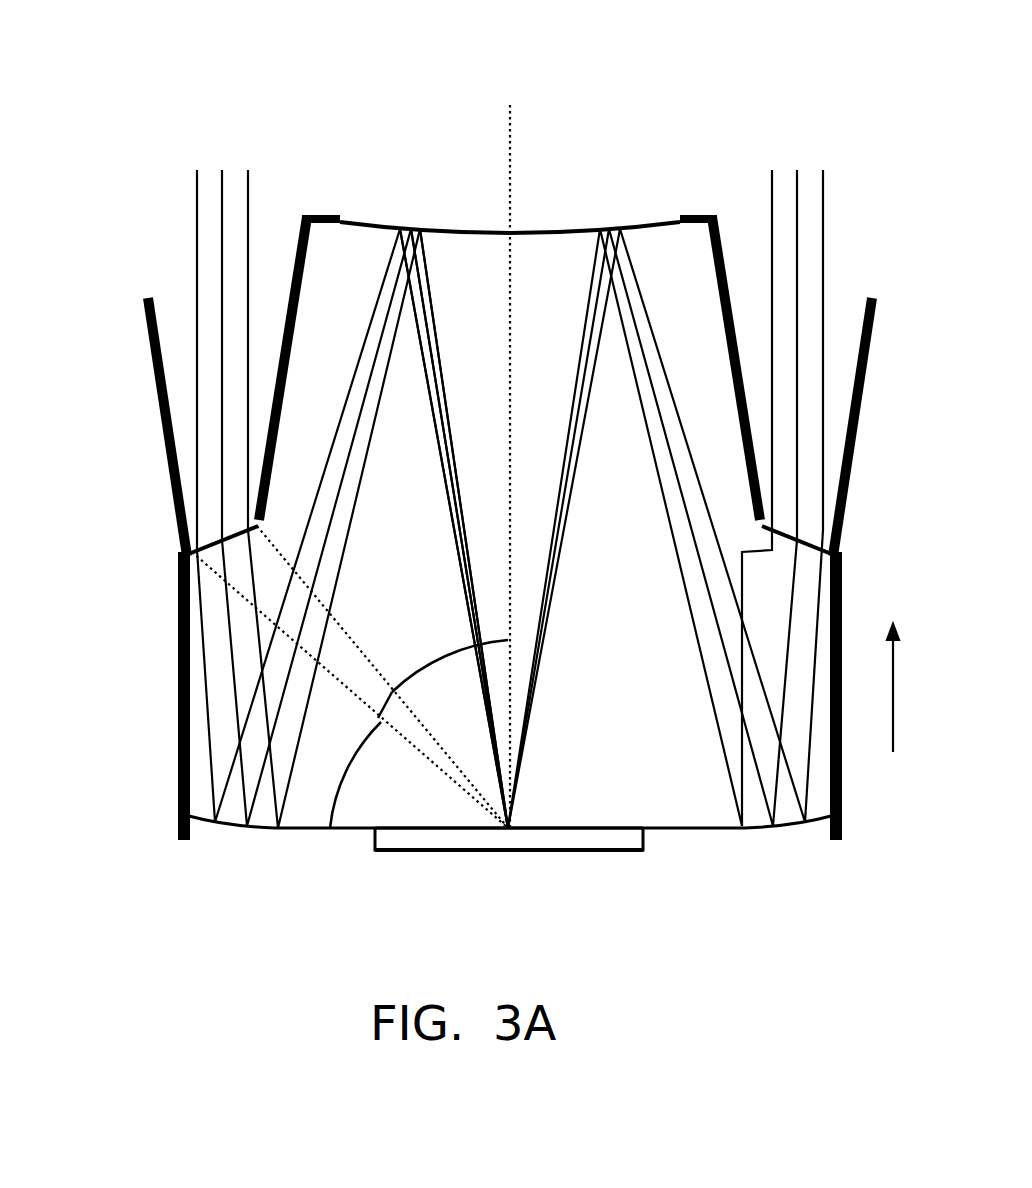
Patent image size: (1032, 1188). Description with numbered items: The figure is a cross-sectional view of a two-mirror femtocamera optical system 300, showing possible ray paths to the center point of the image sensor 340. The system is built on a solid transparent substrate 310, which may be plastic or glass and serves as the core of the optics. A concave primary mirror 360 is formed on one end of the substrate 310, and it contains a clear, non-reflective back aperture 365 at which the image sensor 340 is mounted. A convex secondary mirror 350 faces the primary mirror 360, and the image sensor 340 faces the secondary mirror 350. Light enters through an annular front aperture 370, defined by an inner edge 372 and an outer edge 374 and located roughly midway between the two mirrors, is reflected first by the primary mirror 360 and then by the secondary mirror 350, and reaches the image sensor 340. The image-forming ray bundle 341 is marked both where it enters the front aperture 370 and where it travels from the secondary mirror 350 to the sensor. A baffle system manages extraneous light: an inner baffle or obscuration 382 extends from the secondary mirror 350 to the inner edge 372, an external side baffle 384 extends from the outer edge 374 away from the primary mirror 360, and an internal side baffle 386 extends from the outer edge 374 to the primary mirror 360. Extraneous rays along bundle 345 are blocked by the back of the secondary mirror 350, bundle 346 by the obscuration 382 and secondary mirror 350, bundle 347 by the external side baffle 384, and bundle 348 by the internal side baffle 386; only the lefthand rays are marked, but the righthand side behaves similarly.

The optical system 300 is at (750, 75).
The solid transparent substrate 310 is at (648, 746).
The image sensor 340 is at (392, 852).
The image-forming ray bundle 341 is at (248, 159).
The ray path bundle 345 is at (499, 635).
The ray path bundle 346 is at (440, 656).
The ray path bundle 347 is at (378, 718).
The ray path bundle 348 is at (346, 770).
The convex secondary mirror 350 is at (637, 225).
The concave primary mirror 360 is at (757, 830).
The back aperture 365 is at (628, 829).
The front aperture 370 is at (225, 543).
The inner edge 372 is at (255, 527).
The outer edge 374 is at (176, 527).
The inner baffle (obscuration) 382 is at (322, 215).
The external side baffle 384 is at (152, 370).
The internal side baffle 386 is at (178, 775).